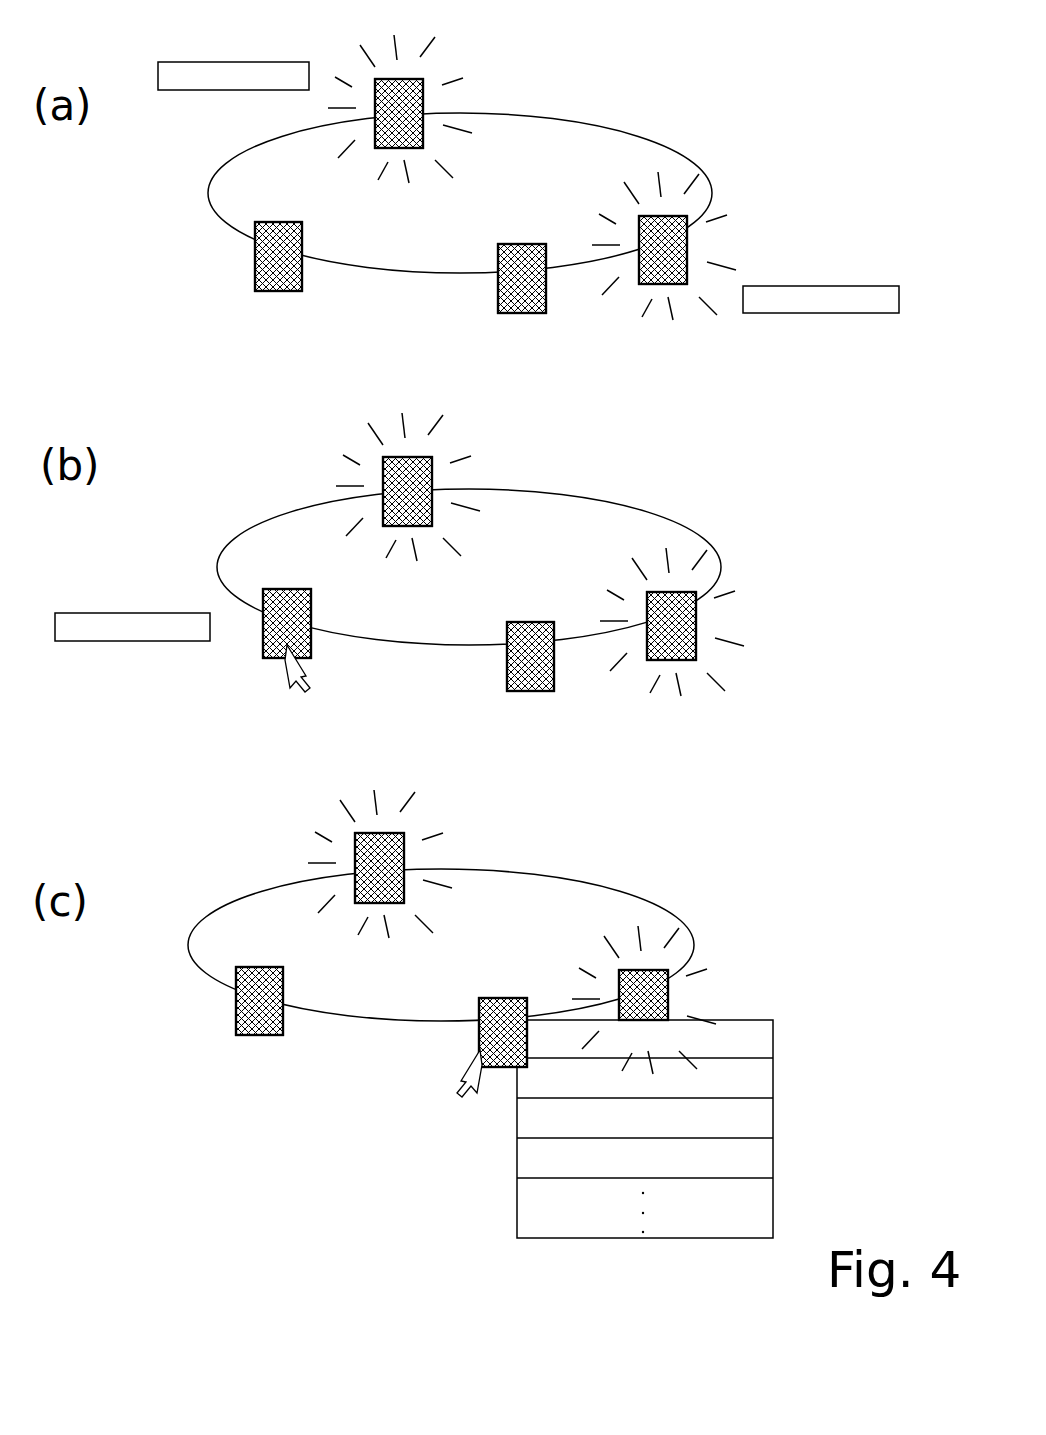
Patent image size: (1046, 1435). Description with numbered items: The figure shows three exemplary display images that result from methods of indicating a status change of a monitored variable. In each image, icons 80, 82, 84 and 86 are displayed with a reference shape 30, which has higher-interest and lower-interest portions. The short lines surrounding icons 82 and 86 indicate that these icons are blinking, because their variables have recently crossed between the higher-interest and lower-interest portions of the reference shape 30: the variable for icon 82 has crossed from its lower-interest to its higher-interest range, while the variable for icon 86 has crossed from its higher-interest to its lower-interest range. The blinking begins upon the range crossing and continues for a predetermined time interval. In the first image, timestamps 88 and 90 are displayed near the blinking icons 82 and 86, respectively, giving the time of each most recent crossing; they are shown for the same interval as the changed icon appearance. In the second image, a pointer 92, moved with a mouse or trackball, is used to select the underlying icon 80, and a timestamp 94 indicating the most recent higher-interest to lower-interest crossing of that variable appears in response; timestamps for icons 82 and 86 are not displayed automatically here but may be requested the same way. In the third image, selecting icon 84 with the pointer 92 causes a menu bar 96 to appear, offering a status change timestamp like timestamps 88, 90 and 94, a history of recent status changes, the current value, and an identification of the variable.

The reference shape 30 is at (617, 130).
The icon 80 is at (270, 265).
The icon 82 is at (420, 82).
The icon 84 is at (515, 283).
The icon 86 is at (664, 266).
The timestamp 88 is at (178, 82).
The timestamp 90 is at (886, 293).
The pointer 92 is at (313, 681).
The timestamp 94 is at (191, 630).
The menu bar 96 is at (775, 1020).